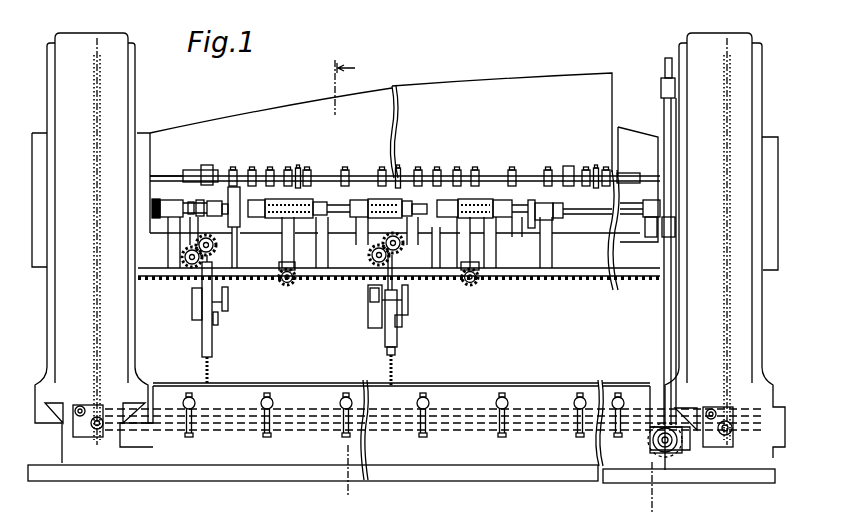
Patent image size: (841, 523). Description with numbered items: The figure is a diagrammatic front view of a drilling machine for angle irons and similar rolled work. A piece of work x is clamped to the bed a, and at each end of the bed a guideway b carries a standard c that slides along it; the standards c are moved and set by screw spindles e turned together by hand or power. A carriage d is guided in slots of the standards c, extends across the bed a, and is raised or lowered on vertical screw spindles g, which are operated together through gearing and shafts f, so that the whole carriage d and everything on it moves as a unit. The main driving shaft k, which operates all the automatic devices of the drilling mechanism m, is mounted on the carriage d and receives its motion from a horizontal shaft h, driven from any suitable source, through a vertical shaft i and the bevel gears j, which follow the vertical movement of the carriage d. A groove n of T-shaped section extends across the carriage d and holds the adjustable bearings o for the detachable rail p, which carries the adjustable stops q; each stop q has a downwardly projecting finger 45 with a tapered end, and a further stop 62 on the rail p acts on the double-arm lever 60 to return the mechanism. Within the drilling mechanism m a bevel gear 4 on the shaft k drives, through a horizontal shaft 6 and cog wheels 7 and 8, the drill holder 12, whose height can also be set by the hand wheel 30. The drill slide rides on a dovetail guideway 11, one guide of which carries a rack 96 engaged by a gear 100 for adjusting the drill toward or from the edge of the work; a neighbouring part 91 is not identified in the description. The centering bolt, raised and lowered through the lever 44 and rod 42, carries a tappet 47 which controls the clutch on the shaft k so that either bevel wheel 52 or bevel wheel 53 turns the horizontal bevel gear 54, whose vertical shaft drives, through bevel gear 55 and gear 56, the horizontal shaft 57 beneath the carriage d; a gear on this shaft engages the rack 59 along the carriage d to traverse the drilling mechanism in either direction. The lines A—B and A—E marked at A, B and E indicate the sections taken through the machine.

The standards c is at (114, 41).
The screw spindles g is at (97, 157).
The carriage d is at (33, 268).
The guideway b is at (62, 422).
The screw spindles e is at (80, 406).
The shafts f is at (97, 430).
The bed a is at (435, 430).
The piece of work x is at (596, 414).
The section line A— E is at (343, 481).
The section line A— B is at (649, 492).
The horizontal shaft h is at (666, 460).
The vertical shaft i is at (665, 60).
The bevel gears j is at (677, 221).
The main driving shaft k is at (600, 215).
The rack 59 is at (605, 236).
The section line A is at (339, 77).
The rail p is at (527, 177).
The groove n is at (185, 173).
The bearings o is at (207, 166).
The stop 62 is at (299, 167).
The finger 45 is at (307, 180).
The stops q is at (420, 168).
The bevel gear 4 is at (183, 201).
The tappet 47 is at (241, 199).
The rod 42 is at (237, 253).
The bevel wheel 52 is at (447, 202).
The double-arm lever 60 is at (470, 203).
The bevel wheel 53 is at (500, 207).
The drilling mechanism m is at (399, 255).
The drill holder 12 is at (215, 244).
The horizontal shaft 6 is at (192, 266).
The gear 100 is at (192, 303).
The handle 91 is at (228, 305).
The gear 56 is at (286, 285).
The horizontal shaft 57 is at (468, 285).
The cog wheel 8 is at (370, 276).
The cog wheel 7 is at (395, 250).
The rack 96 is at (372, 298).
The dovetail guideway 11 is at (371, 314).
The lever 44 is at (413, 273).
The hand wheel 30 is at (402, 326).
The horizontal bevel gear 54 is at (458, 242).
The bevel gear 55 is at (480, 267).